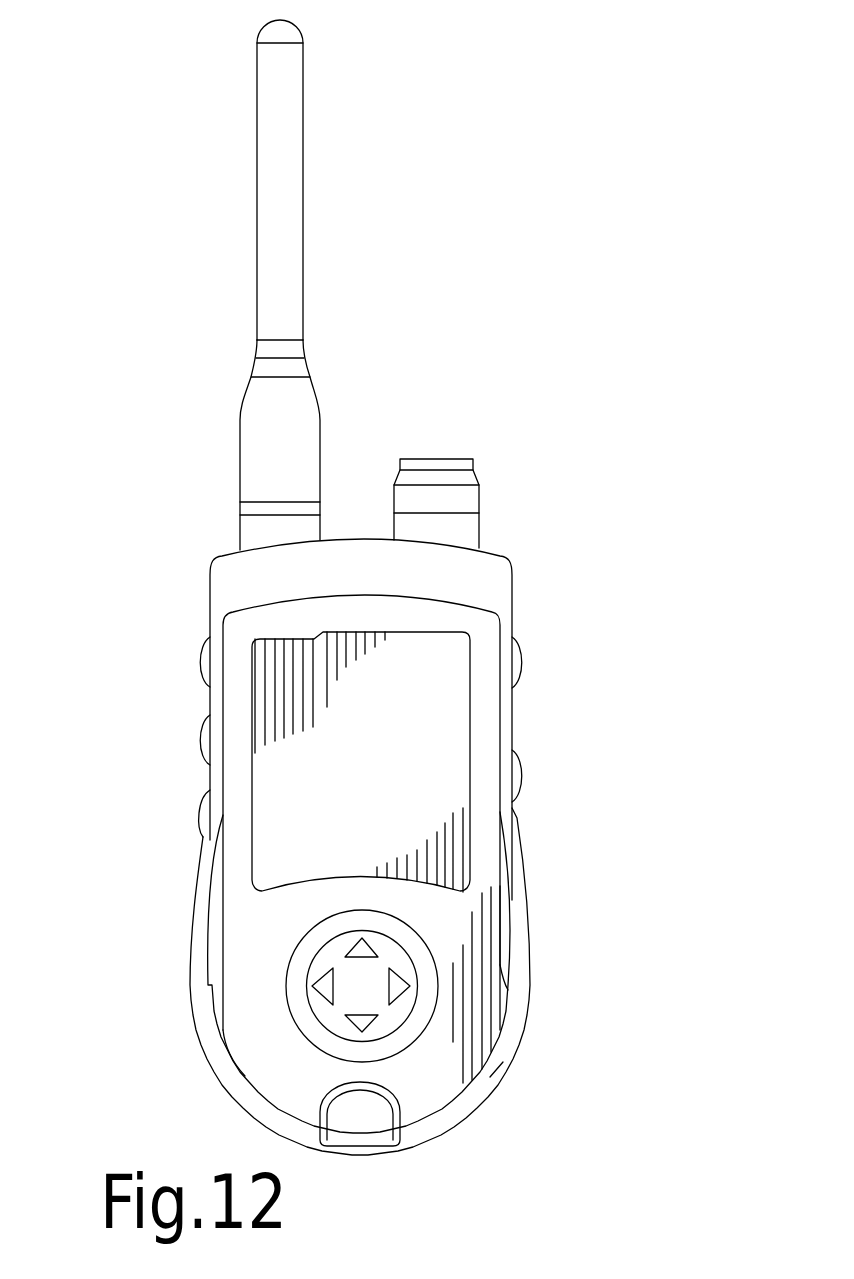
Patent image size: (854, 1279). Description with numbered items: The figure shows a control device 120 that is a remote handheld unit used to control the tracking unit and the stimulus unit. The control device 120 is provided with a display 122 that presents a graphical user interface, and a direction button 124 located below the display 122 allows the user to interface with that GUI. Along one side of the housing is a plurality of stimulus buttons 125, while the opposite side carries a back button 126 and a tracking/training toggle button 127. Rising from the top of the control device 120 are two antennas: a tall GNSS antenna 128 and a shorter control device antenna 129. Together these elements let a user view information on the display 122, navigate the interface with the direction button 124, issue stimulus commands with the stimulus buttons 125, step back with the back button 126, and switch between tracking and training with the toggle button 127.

The control device 120 is at (503, 553).
The display 122 is at (447, 737).
The direction button 124 is at (375, 998).
The stimulus buttons 125 is at (203, 665).
The back button 126 is at (520, 662).
The tracking/training toggle button 127 is at (522, 778).
The GNSS antenna 128 is at (258, 232).
The control device antenna 129 is at (418, 457).